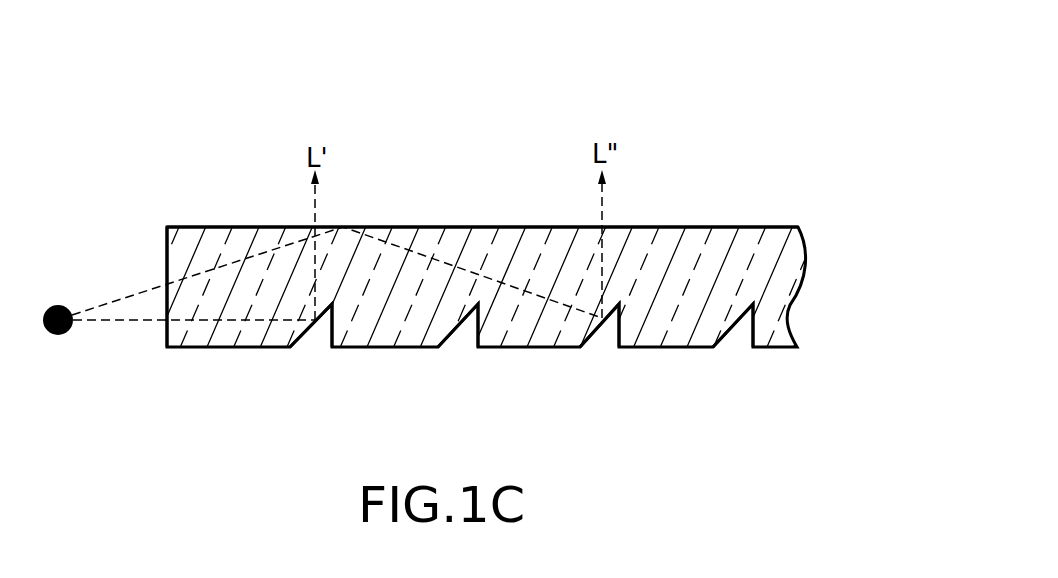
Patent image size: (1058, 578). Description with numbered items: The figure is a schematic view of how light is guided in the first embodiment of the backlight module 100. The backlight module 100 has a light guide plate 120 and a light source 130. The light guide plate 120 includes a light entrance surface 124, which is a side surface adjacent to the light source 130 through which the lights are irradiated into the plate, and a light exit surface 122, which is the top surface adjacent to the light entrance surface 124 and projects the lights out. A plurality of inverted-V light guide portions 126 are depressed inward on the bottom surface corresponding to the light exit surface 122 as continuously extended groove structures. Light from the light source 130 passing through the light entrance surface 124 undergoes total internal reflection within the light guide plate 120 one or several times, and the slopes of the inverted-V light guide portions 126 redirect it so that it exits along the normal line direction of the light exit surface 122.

The backlight module 100 is at (641, 112).
The light guide plate 120 is at (708, 278).
The light exit surface 122 is at (410, 227).
The light entrance surface 124 is at (167, 262).
The inverted-V light guide portions 126 is at (452, 330).
The light source 130 is at (58, 337).